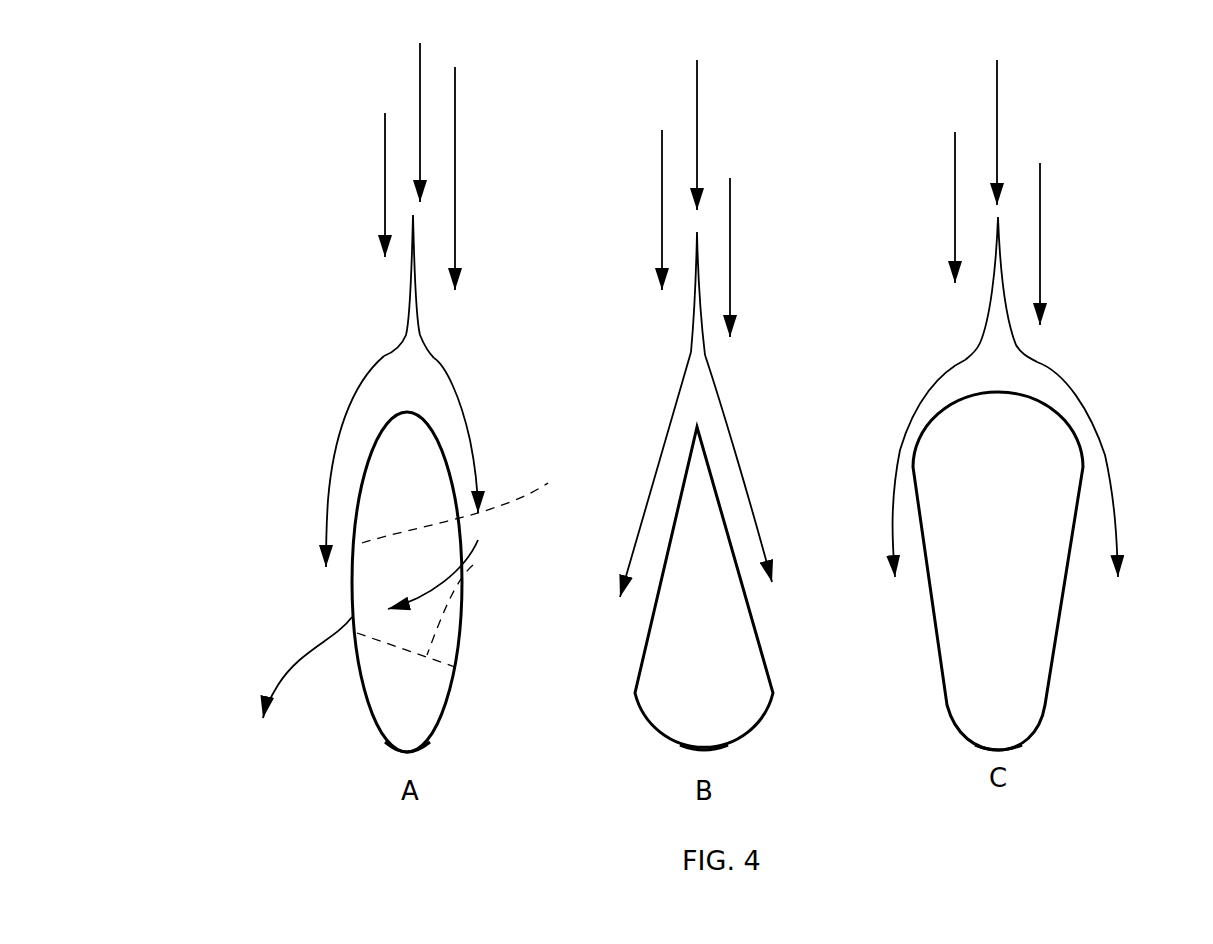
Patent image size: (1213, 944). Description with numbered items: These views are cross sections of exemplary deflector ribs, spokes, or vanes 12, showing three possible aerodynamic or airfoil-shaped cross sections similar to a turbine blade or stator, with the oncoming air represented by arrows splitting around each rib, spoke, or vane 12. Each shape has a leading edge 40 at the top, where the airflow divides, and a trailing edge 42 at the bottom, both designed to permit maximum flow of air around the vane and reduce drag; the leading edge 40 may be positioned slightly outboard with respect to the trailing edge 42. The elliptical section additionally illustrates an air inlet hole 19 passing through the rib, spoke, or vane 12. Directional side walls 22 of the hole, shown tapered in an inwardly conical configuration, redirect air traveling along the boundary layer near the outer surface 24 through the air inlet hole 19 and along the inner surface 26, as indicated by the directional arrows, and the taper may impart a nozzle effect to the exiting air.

In FIG. 4A, the rib, spoke, or vane 12 is at (423, 504).
In FIG. 4B, the rib, spoke, or vane 12 is at (714, 603).
In FIG. 4C, the rib, spoke, or vane 12 is at (1012, 592).
In FIG. 4A, the air inlet hole 19 is at (387, 575).
In FIG. 4A, the directional side wall 22 is at (473, 565).
In FIG. 4A, the outer surface 24 is at (453, 465).
In FIG. 4A, the inner surface 26 is at (353, 652).
In FIG. 4A, the leading edge 40 is at (405, 412).
In FIG. 4B, the leading edge 40 is at (697, 427).
In FIG. 4C, the leading edge 40 is at (1005, 392).
In FIG. 4A, the trailing edge 42 is at (403, 757).
In FIG. 4B, the trailing edge 42 is at (718, 747).
In FIG. 4C, the trailing edge 42 is at (1002, 747).